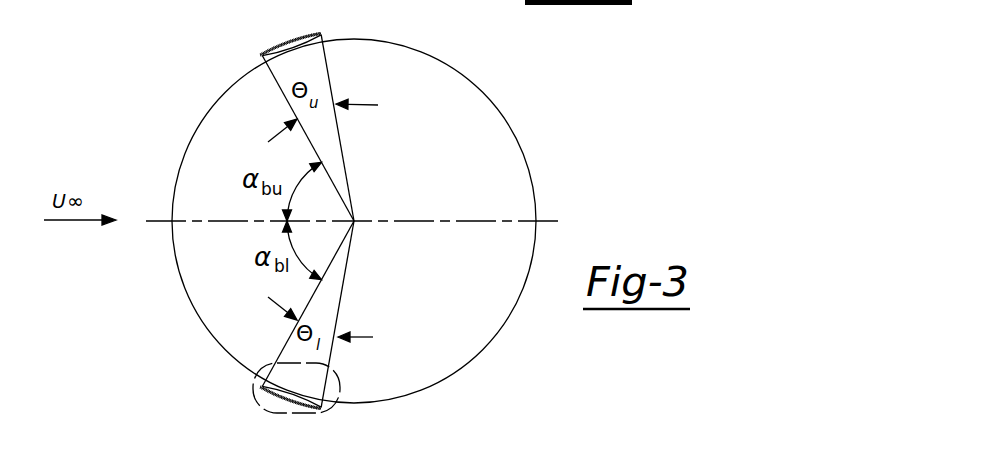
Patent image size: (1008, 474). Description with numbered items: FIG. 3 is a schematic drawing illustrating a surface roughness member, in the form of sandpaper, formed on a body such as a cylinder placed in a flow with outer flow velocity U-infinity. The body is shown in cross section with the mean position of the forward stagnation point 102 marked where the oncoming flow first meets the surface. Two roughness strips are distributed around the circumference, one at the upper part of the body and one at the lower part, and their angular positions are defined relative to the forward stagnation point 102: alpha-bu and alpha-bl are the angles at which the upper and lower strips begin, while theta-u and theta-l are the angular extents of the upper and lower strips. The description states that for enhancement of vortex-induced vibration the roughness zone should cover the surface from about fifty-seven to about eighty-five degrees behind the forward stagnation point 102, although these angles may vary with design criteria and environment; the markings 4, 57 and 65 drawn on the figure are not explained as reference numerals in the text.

The forward stagnation point 102 is at (172, 220).
The lower slot region 4 is at (252, 386).
The upper slot angle edge 57 is at (288, 123).
The upper slot angle edge 65 is at (307, 110).